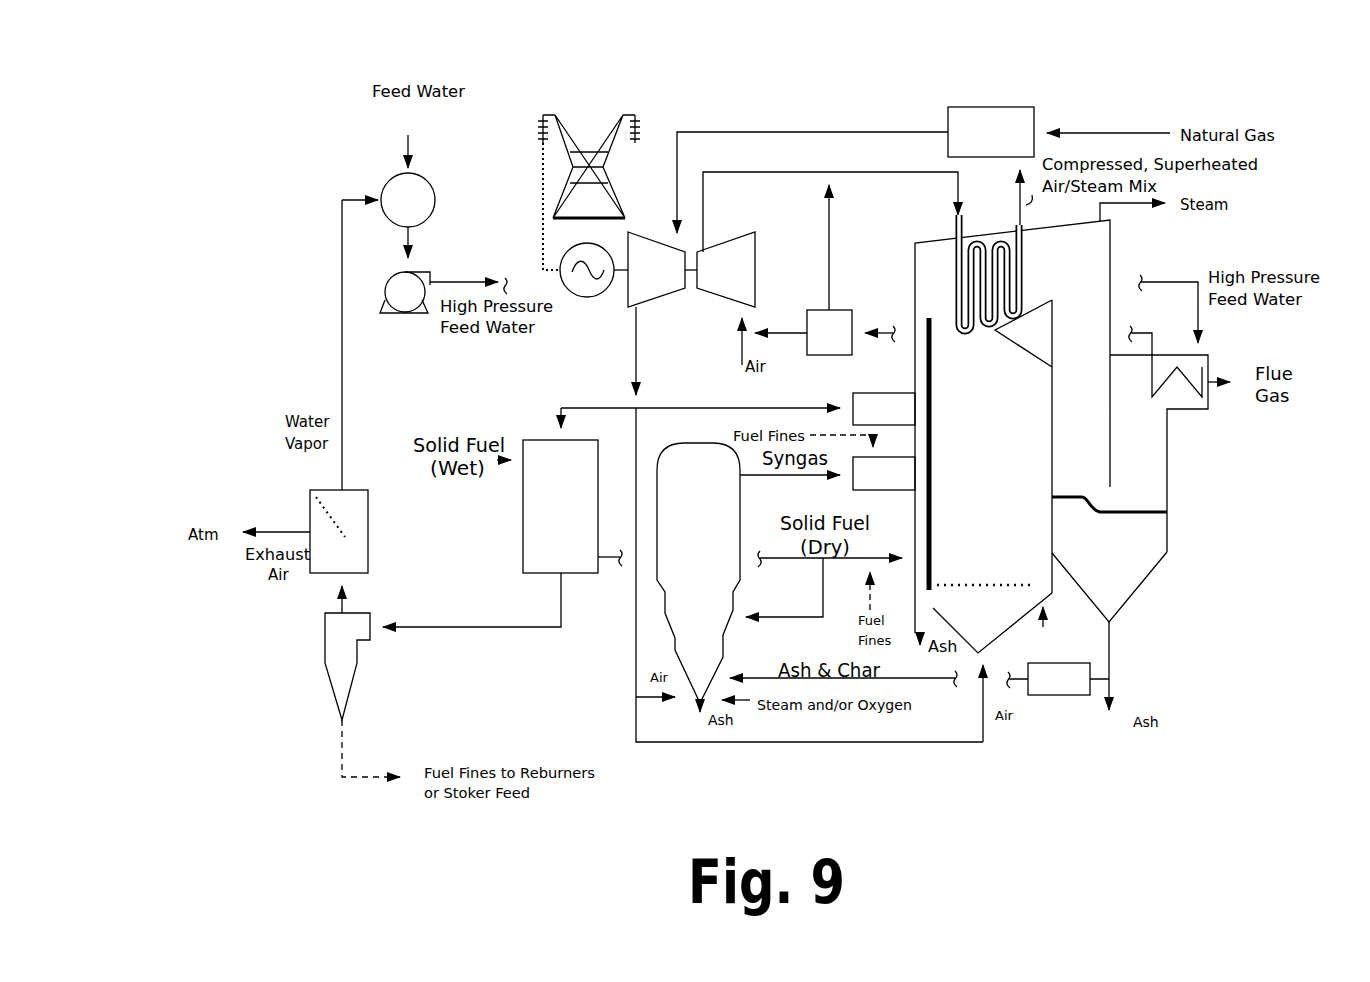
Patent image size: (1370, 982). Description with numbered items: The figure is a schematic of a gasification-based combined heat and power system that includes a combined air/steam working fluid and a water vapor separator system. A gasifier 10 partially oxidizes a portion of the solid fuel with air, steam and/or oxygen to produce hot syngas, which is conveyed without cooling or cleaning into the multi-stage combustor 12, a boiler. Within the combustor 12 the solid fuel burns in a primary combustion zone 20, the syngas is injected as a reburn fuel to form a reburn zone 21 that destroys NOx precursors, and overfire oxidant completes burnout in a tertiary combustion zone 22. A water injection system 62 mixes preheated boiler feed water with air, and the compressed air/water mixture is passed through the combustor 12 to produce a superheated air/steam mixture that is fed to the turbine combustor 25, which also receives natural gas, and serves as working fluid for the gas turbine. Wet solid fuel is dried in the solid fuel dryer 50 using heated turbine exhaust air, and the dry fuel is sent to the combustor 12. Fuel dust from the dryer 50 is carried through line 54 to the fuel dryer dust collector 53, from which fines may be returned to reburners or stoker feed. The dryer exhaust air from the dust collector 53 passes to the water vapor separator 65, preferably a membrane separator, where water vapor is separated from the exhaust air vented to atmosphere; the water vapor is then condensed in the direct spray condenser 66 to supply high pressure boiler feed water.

The gasifier 10 is at (673, 651).
The multi-stage combustor 12 is at (1167, 512).
The primary combustion zone 20 is at (1000, 567).
The reburn zone 21 is at (1005, 495).
The tertiary combustion zone 22 is at (1000, 433).
The turbine combustor 25 is at (995, 107).
The solid fuel dryer 50 is at (523, 528).
The fuel dryer dust collector 53 is at (328, 683).
The line 54 is at (480, 630).
The water injection system 62 is at (840, 310).
The water vapor separator 65 is at (312, 573).
The direct spray condenser 66 is at (432, 178).